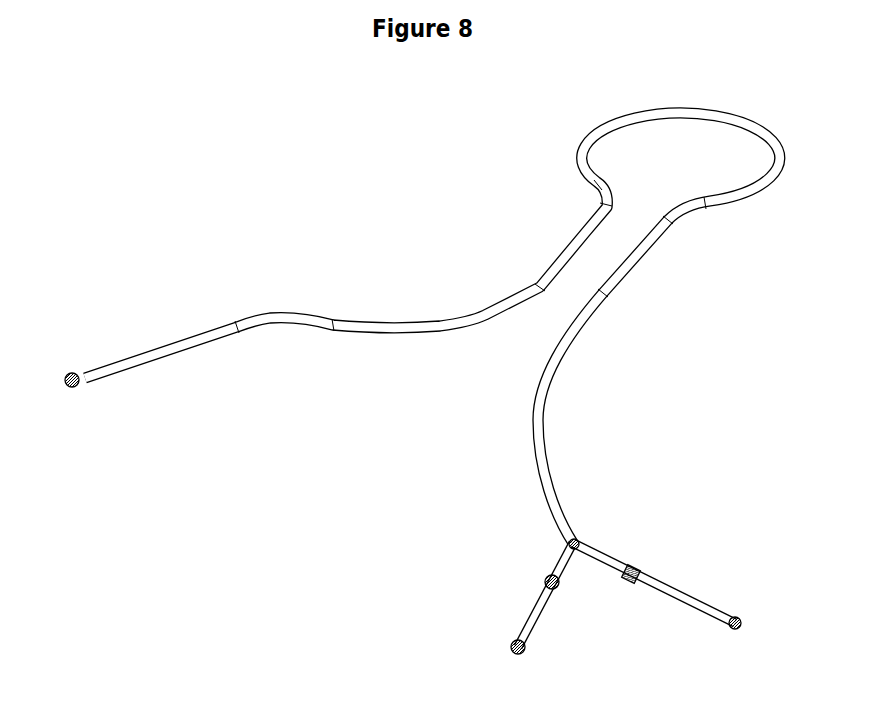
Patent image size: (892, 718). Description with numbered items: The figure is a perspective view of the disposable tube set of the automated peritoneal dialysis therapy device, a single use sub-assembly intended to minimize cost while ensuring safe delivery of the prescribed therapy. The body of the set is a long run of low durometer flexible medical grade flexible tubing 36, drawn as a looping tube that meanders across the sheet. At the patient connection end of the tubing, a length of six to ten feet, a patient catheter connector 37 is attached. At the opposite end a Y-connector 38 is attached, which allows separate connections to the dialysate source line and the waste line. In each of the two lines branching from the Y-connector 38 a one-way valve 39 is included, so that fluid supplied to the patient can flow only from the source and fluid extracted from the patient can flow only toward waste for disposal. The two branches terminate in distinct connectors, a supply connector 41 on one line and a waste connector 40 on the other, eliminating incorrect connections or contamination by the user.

The flexible tubing 36 is at (440, 323).
The patient catheter connector 37 is at (74, 376).
The Y-connector 38 is at (577, 541).
The one-way valve 39 is at (546, 577).
The waste connector 40 is at (513, 643).
The supply connector 41 is at (734, 620).